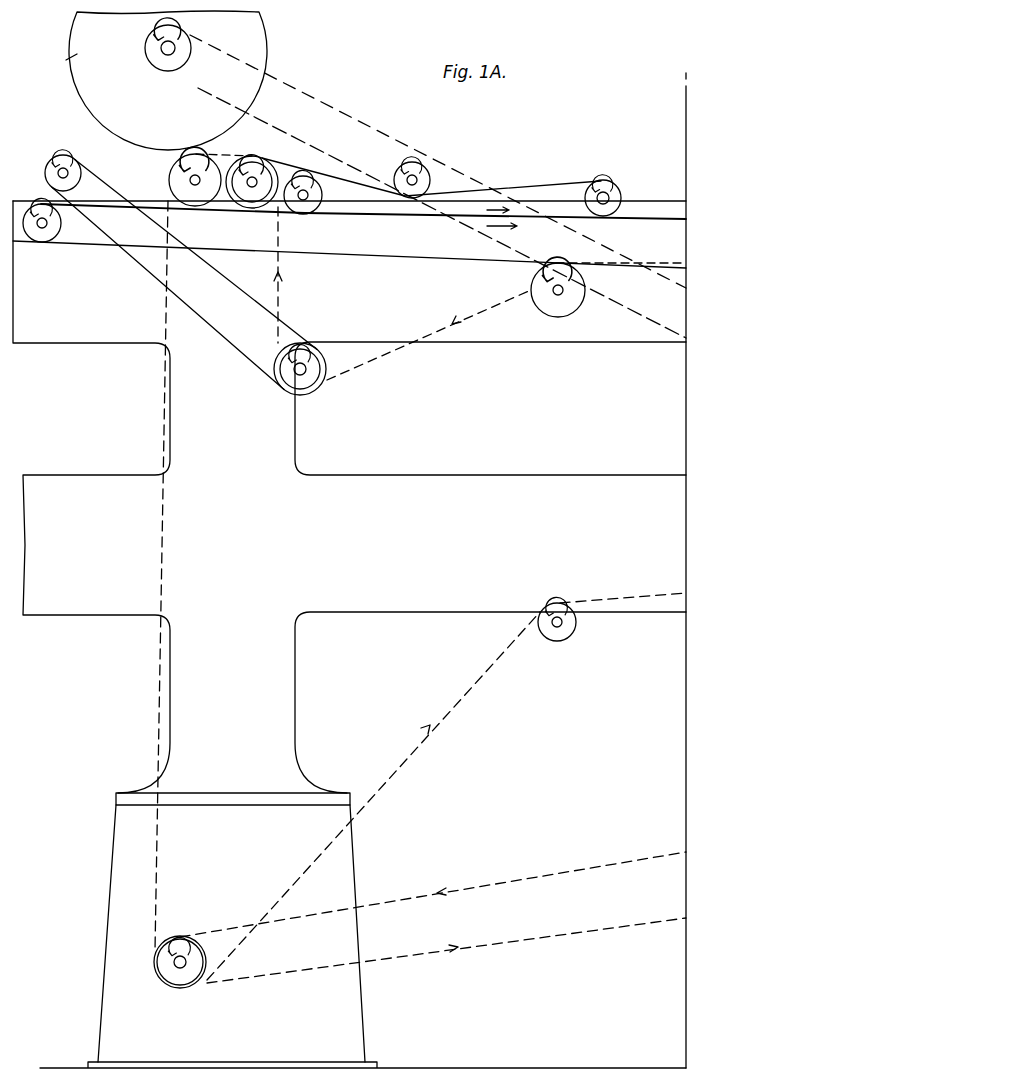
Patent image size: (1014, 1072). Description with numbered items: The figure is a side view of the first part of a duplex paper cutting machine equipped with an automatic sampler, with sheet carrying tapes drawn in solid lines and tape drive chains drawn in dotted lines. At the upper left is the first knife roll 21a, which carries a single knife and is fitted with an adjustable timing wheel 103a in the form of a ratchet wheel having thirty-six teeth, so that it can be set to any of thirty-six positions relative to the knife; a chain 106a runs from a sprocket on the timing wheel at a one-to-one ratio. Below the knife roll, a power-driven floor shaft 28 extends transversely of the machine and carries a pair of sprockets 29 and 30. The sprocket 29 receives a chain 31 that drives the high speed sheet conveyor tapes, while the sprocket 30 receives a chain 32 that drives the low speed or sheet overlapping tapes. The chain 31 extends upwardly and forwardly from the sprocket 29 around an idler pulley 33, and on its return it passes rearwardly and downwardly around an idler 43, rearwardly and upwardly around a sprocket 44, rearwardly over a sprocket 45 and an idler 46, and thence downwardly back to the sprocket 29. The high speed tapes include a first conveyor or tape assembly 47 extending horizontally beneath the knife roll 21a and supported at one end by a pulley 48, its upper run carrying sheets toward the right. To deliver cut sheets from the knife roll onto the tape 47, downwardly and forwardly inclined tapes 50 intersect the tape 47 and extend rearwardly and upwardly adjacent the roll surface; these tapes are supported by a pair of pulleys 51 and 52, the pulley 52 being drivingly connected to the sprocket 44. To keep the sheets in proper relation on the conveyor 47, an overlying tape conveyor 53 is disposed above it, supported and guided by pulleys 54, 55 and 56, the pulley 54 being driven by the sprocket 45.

The first knife roll 21a is at (103, 84).
The adjustable timing wheel 103a is at (181, 64).
The chain 106a is at (366, 123).
The pulley 51 is at (55, 160).
The inclined tapes 50 is at (104, 180).
The idler 46 is at (172, 170).
The sprocket 45 is at (256, 157).
The pulley 54 is at (264, 176).
The pulley 55 is at (311, 214).
The first conveyor or tape assembly 47 is at (386, 256).
The overlying tape conveyor 53 is at (546, 184).
The pulley 56 is at (610, 182).
The pulley 48 is at (44, 243).
The idler 43 is at (553, 317).
The sprocket 44 is at (305, 343).
The pulley 52 is at (296, 382).
The idler pulley 33 is at (554, 641).
The chain 31 is at (392, 772).
The sprocket 29 is at (172, 936).
The floor shaft 28 is at (163, 972).
The sprocket 30 is at (186, 980).
The chain 32 is at (498, 946).